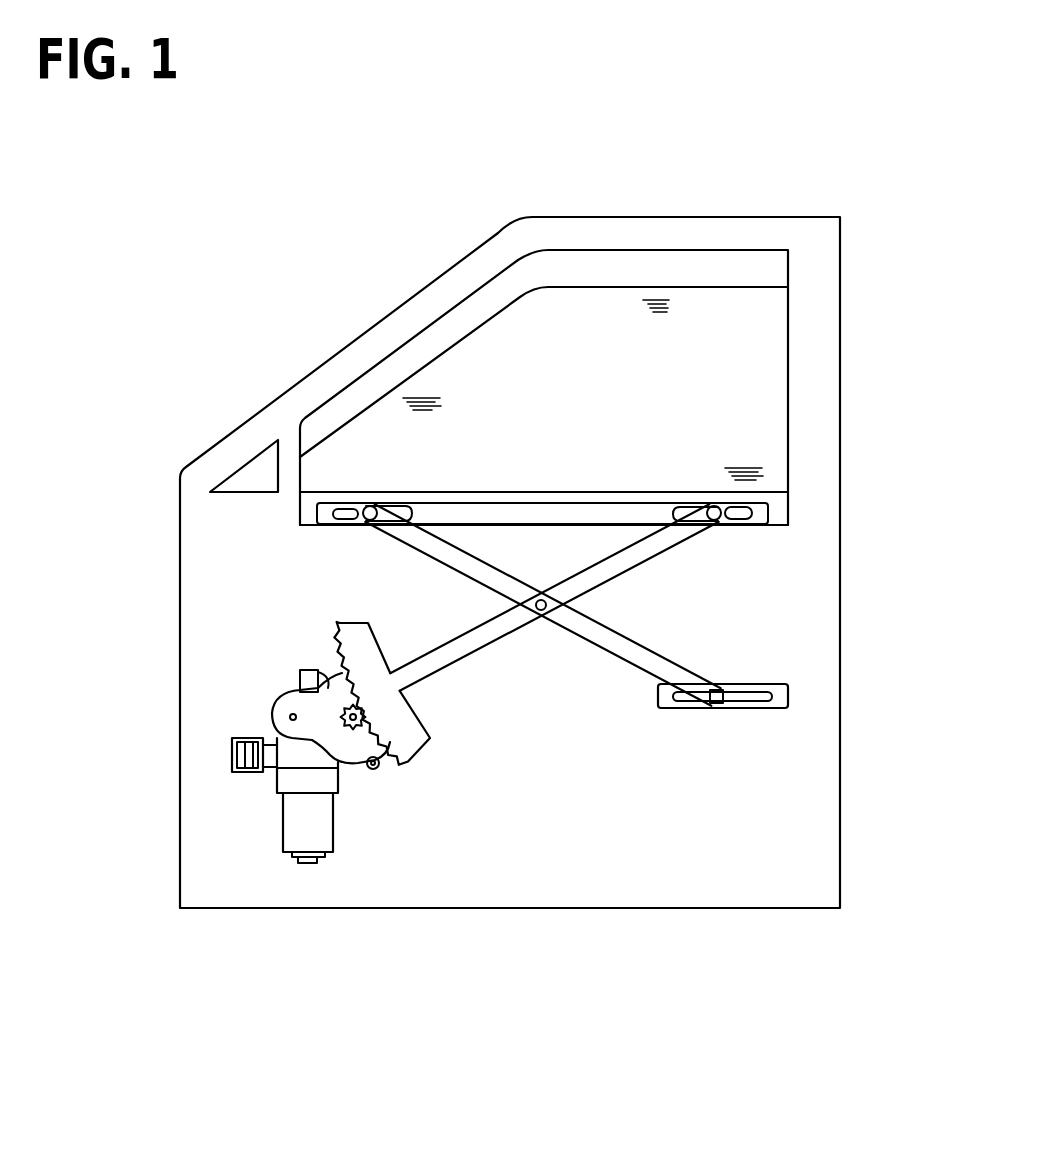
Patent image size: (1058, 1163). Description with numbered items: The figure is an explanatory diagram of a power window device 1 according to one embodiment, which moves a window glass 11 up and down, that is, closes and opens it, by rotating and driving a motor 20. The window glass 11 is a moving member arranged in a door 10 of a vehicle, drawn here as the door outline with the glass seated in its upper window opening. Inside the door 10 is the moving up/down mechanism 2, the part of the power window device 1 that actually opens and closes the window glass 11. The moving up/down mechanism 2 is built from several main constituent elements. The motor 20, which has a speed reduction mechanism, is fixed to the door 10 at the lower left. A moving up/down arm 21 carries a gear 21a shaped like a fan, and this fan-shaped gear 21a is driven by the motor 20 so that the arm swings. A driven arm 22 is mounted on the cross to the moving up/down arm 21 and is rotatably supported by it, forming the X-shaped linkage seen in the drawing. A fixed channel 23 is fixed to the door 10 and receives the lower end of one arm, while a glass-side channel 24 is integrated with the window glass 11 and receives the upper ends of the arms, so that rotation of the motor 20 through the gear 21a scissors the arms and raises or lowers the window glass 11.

The power window device 1 is at (264, 339).
The moving up/down mechanism 2 is at (248, 653).
The door 10 is at (812, 600).
The window glass 11 is at (572, 303).
The motor 20 is at (290, 830).
The moving up/down arm 21 is at (650, 557).
The gear 21a is at (407, 742).
The driven arm 22 is at (595, 635).
The fixed channel 23 is at (743, 707).
The glass-side channel 24 is at (765, 508).